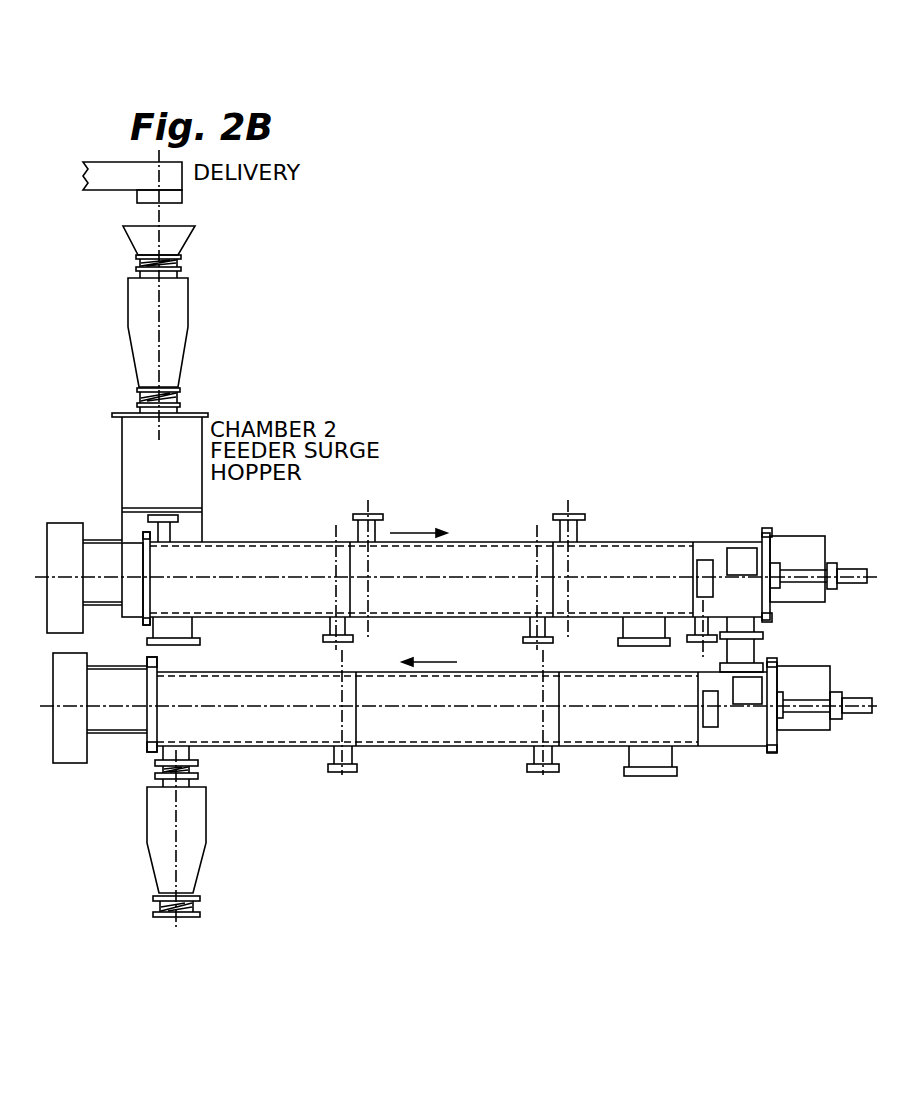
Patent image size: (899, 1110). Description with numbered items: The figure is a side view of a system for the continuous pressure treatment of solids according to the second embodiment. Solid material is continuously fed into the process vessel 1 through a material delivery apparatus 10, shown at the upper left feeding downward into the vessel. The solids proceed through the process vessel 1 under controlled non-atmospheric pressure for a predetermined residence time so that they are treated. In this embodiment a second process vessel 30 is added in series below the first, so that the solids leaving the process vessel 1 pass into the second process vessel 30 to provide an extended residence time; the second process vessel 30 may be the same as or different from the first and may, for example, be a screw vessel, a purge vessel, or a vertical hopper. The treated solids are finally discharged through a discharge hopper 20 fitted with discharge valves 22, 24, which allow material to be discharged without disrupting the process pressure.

The process vessel 1 is at (483, 538).
The material delivery apparatus 10 is at (185, 380).
The discharge hopper 20 is at (207, 855).
The discharge valve 22 is at (200, 777).
The discharge valve 24 is at (197, 913).
The second process vessel 30 is at (597, 728).